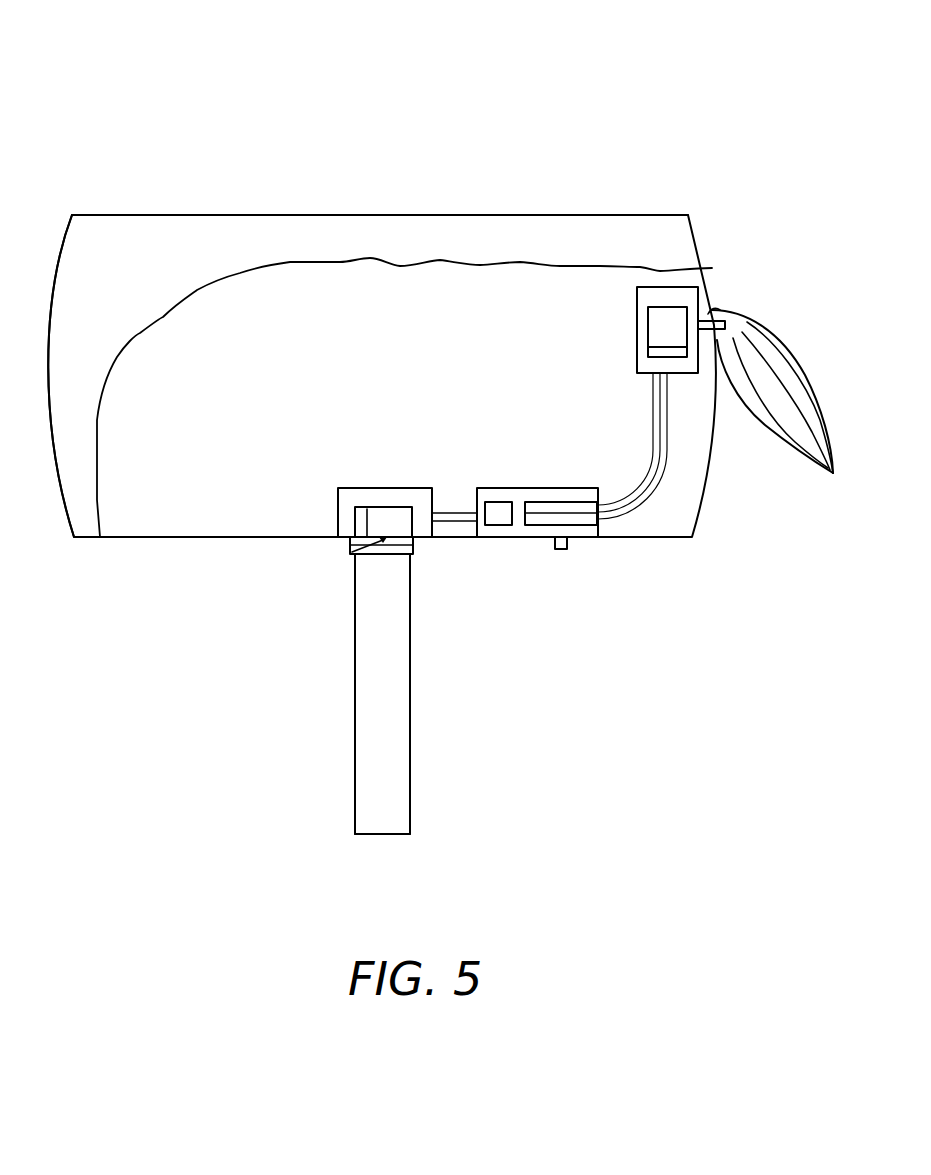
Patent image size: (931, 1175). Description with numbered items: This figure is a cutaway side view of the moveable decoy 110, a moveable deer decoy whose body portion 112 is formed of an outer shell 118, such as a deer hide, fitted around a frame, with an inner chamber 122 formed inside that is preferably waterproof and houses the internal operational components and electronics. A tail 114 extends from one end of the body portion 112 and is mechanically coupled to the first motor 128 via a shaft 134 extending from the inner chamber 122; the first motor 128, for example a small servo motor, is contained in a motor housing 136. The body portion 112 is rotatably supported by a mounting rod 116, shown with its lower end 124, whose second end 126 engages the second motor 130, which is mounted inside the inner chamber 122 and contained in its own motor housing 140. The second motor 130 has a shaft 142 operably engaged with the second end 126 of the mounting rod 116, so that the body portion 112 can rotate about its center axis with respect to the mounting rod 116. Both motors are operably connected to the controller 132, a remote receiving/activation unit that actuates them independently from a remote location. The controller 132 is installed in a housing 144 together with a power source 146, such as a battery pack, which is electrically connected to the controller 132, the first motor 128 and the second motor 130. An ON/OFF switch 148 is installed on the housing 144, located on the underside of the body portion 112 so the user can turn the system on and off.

The moveable decoy 110 is at (220, 68).
The body portion 112 is at (352, 215).
The tail 114 is at (798, 350).
The mounting rod 116 is at (412, 683).
The outer shell 118 is at (140, 227).
The inner chamber 122 is at (398, 375).
The handle end 124 is at (353, 822).
The second end 126 is at (352, 548).
The first motor 128 is at (672, 307).
The second motor 130 is at (376, 505).
The controller 132 is at (500, 527).
The shaft 134 is at (712, 310).
The motor housing 136 is at (660, 287).
The motor housing 140 is at (405, 488).
The shaft 142 is at (352, 556).
The housing 144 is at (528, 488).
The power source 146 is at (565, 495).
The ON/OFF switch 148 is at (562, 549).